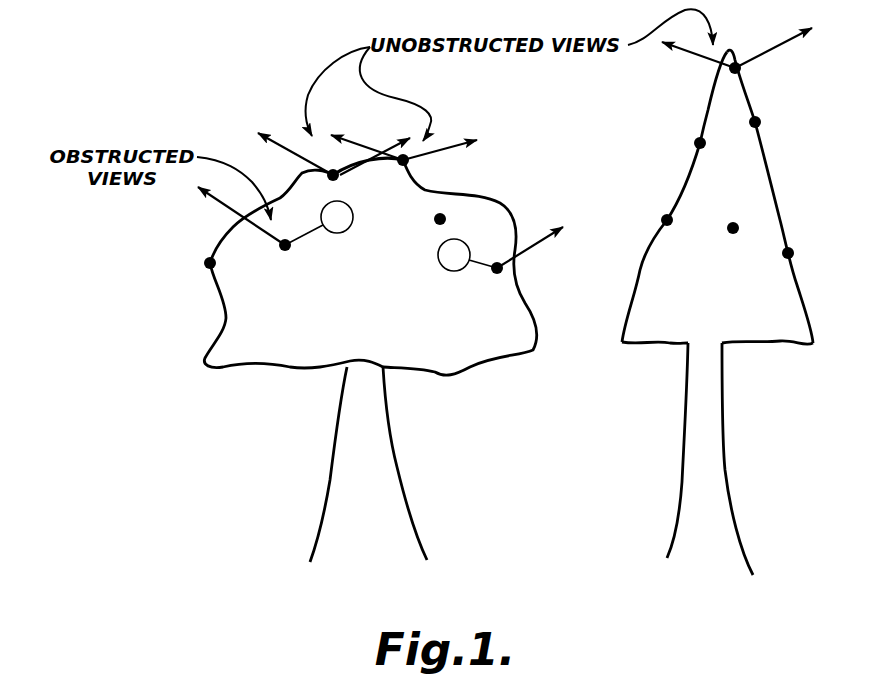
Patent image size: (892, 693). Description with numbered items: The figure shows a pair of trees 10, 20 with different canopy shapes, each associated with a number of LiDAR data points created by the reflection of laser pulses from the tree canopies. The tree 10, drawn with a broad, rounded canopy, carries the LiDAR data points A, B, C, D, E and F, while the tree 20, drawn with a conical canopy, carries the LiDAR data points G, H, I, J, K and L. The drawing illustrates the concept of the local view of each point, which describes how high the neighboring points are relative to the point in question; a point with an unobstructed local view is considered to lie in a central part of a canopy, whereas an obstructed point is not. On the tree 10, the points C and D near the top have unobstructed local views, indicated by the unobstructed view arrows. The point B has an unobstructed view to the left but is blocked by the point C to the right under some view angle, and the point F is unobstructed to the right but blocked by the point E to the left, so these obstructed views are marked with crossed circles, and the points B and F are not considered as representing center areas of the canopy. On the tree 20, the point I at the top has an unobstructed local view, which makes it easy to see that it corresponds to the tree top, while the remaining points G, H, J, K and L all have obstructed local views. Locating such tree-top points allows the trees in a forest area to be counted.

The tree 10 is at (332, 480).
The tree 20 is at (684, 481).
The LiDAR data point A is at (220, 268).
The LiDAR data point B is at (288, 256).
The LiDAR data point C is at (340, 185).
The LiDAR data point D is at (399, 174).
The LiDAR data point E is at (448, 222).
The LiDAR data point F is at (490, 280).
The LiDAR data point G is at (655, 219).
The LiDAR data point H is at (685, 143).
The LiDAR data point I is at (742, 71).
The LiDAR data point J is at (762, 122).
The LiDAR data point K is at (736, 216).
The LiDAR data point L is at (798, 247).